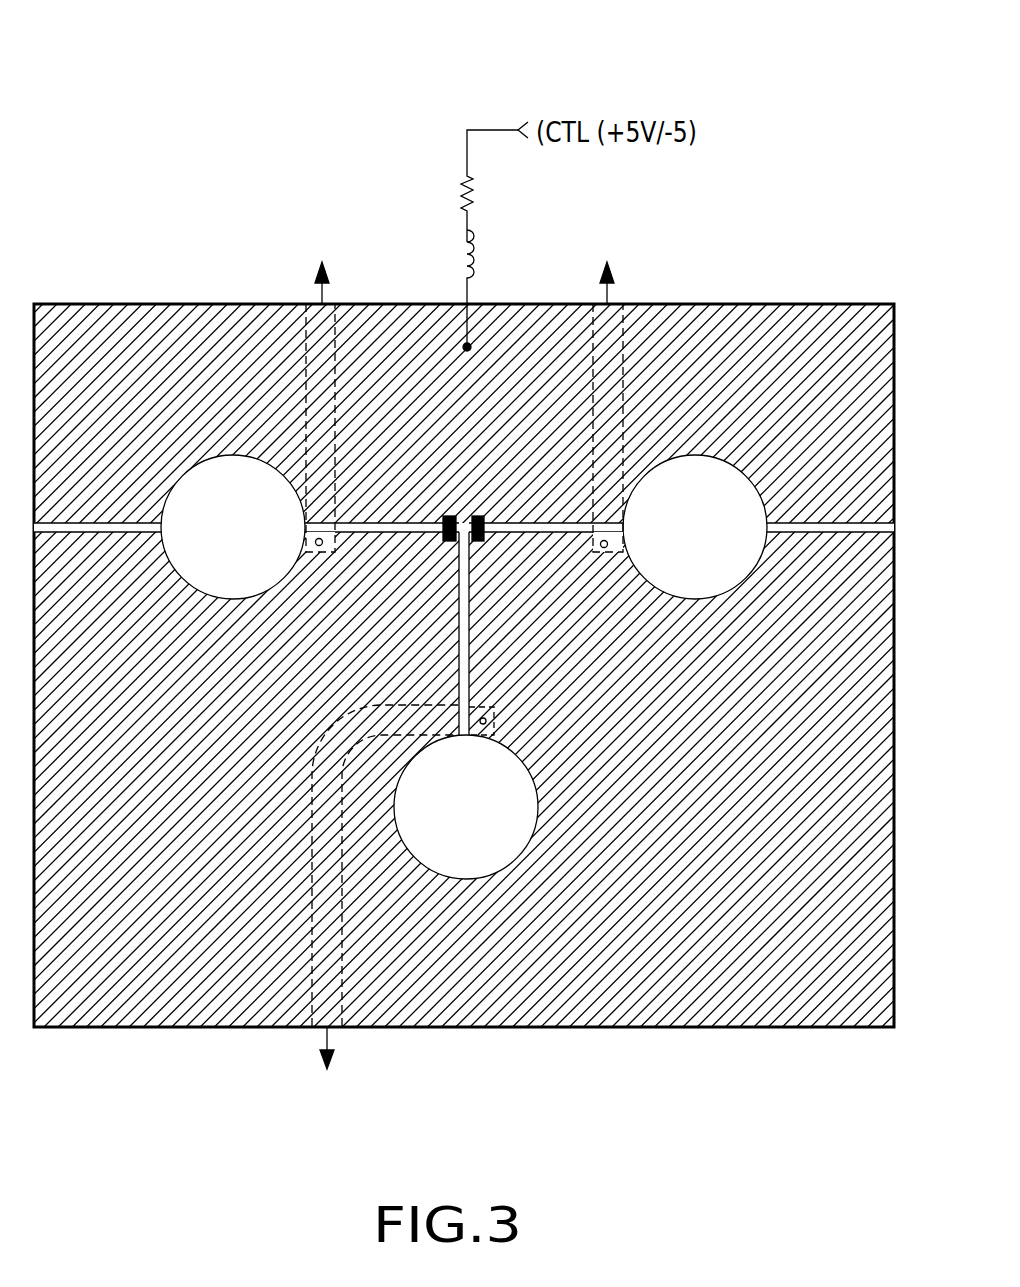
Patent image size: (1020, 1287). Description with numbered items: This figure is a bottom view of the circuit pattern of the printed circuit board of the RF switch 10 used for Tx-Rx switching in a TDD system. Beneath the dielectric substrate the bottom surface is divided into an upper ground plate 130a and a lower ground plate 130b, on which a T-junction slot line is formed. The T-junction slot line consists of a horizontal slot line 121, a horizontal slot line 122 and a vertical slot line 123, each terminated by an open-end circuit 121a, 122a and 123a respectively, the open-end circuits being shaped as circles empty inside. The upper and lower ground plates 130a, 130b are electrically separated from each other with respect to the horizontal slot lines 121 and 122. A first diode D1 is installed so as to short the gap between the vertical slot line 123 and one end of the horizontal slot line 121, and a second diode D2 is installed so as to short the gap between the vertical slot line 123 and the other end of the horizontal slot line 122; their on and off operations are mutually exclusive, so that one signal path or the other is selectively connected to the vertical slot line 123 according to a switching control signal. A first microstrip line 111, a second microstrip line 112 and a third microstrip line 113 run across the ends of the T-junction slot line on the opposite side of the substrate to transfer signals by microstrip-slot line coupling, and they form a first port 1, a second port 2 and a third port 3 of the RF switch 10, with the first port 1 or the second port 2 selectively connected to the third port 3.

The RF switch 10 is at (166, 78).
The first microstrip line 111 is at (593, 338).
The second microstrip line 112 is at (305, 352).
The third microstrip line 113 is at (342, 985).
The horizontal slot line 121 is at (540, 522).
The open-end circuit 121a is at (726, 547).
The horizontal slot line 122 is at (376, 522).
The open-end circuit 122a is at (264, 547).
The vertical slot line 123 is at (470, 651).
The open-end circuit 123a is at (497, 825).
The upper ground plate 130a is at (118, 382).
The lower ground plate 130b is at (118, 622).
The first diode D1 is at (491, 546).
The second diode D2 is at (436, 546).
The first port 1 is at (619, 286).
The second port 2 is at (335, 286).
The third port 3 is at (313, 1045).